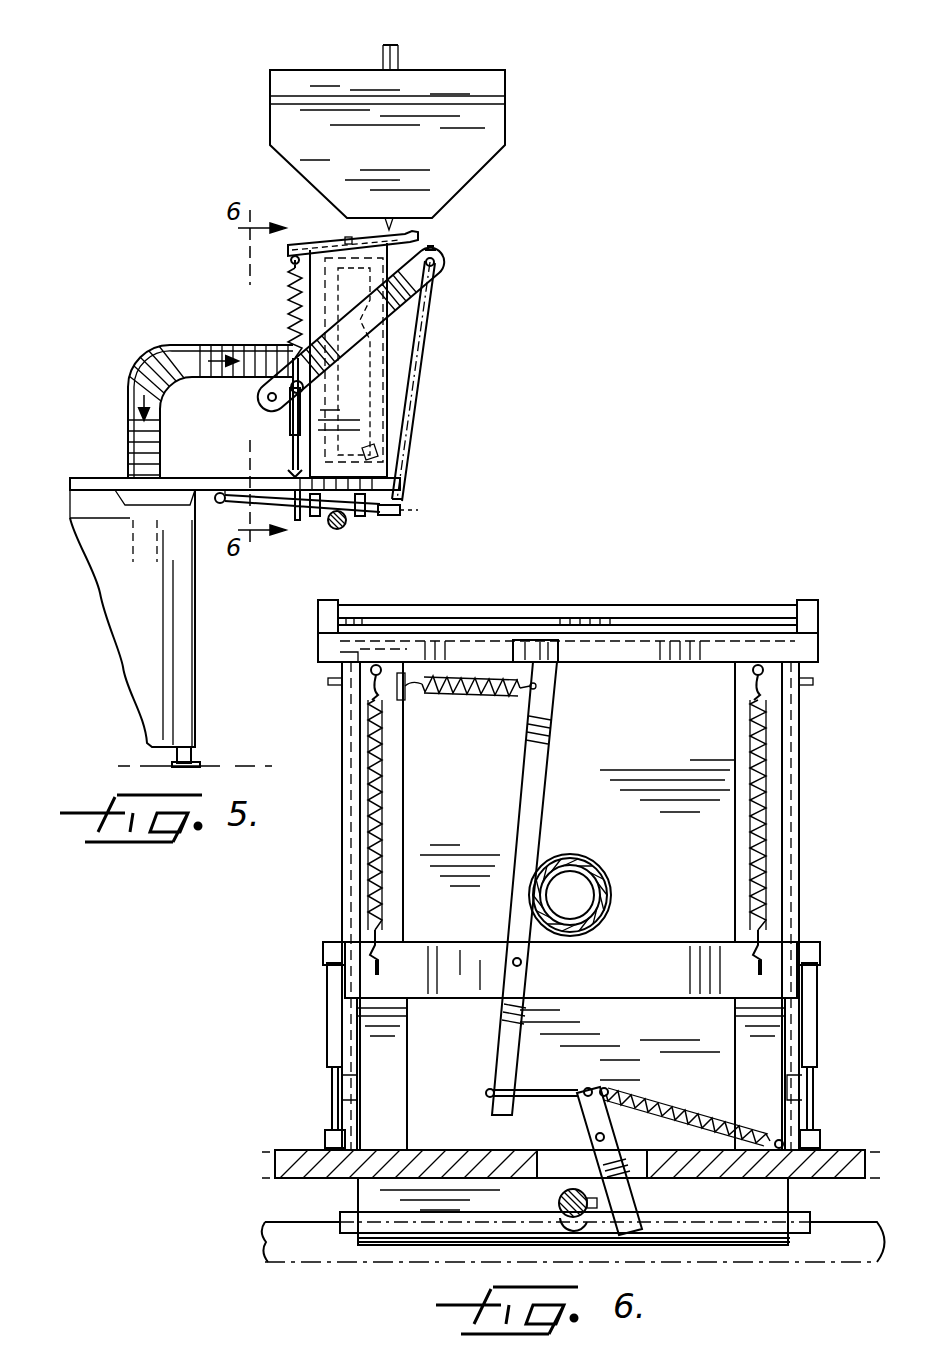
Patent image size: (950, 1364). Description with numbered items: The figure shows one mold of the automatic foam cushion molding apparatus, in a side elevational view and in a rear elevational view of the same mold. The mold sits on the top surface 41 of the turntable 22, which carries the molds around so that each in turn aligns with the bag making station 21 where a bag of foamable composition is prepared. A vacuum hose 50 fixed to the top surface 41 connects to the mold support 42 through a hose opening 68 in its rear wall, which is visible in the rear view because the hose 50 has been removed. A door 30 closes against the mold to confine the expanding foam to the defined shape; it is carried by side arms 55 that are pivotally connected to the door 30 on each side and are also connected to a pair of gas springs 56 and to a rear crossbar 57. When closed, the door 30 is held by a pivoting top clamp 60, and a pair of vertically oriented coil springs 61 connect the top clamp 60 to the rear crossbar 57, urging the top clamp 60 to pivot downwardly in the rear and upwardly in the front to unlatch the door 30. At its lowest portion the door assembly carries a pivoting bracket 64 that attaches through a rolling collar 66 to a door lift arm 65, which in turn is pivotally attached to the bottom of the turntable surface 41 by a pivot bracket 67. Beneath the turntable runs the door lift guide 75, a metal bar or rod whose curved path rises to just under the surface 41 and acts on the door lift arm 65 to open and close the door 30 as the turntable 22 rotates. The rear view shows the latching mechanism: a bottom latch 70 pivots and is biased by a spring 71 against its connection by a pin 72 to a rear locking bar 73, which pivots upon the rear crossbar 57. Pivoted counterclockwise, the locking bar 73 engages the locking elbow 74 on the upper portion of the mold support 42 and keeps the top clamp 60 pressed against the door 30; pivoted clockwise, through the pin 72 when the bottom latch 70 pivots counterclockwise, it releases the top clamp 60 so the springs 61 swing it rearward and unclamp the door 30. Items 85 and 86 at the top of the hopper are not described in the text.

In FIG. 5, the bag making station 21 is at (552, 90).
In FIG. 5, the turntable 22 is at (88, 600).
In FIG. 5, the door 30 is at (413, 363).
In FIG. 5, the top surface 41 is at (86, 478).
In FIG. 6, the top surface 41 is at (297, 1150).
In FIG. 6, the mold support 42 is at (690, 893).
In FIG. 5, the vacuum hose 50 is at (152, 350).
In FIG. 5, the side arm 55 is at (432, 270).
In FIG. 6, the gas spring 56 is at (330, 1022).
In FIG. 6, the rear crossbar 57 is at (640, 981).
In FIG. 5, the top clamp 60 is at (413, 235).
In FIG. 6, the top clamp 60 is at (806, 600).
In FIG. 6, the coil spring 61 is at (378, 752).
In FIG. 5, the pivoting bracket 64 is at (395, 512).
In FIG. 5, the door lift arm 65 is at (292, 514).
In FIG. 5, the rolling collar 66 is at (352, 516).
In FIG. 5, the pivot bracket 67 is at (216, 504).
In FIG. 6, the hose opening 68 is at (598, 870).
In FIG. 6, the bottom latch 70 is at (628, 1212).
In FIG. 6, the spring 71 is at (650, 1100).
In FIG. 6, the pin 72 is at (548, 1100).
In FIG. 6, the rear locking bar 73 is at (542, 798).
In FIG. 6, the locking elbow 74 is at (513, 650).
In FIG. 6, the door lift guide 75 is at (826, 1250).
In FIG. 5, the supply pipe 85 is at (400, 55).
In FIG. 5, the valve 86 is at (378, 56).